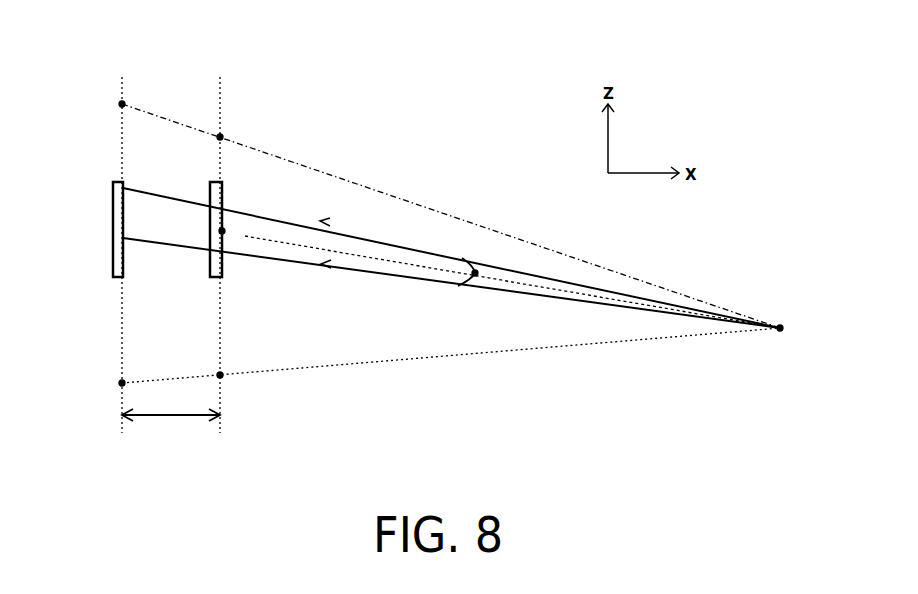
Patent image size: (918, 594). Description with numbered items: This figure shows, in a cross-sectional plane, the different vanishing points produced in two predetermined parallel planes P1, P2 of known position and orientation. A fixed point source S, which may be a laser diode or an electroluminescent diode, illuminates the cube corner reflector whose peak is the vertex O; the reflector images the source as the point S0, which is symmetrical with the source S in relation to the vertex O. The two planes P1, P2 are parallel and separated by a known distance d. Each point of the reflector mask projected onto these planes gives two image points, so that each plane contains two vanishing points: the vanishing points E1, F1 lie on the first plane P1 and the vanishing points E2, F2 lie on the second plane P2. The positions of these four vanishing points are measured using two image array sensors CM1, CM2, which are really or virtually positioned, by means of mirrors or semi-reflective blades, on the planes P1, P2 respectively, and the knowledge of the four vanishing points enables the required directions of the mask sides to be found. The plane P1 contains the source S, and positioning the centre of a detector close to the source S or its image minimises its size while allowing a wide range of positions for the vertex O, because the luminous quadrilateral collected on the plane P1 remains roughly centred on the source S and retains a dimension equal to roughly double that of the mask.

The first plane P1 is at (220, 245).
The second plane P2 is at (122, 245).
The vanishing point on plane P1 E1 is at (233, 129).
The vanishing point on plane P2 E2 is at (436, 212).
The vanishing point on plane P1 F1 is at (233, 384).
The vanishing point on plane P2 F2 is at (437, 361).
The first image array sensor CM1 is at (222, 278).
The second image array sensor CM2 is at (113, 278).
The point source S is at (499, 276).
The vertex of the reflector O is at (479, 272).
The image of the source S0 is at (795, 330).
The distance between planes d is at (171, 427).